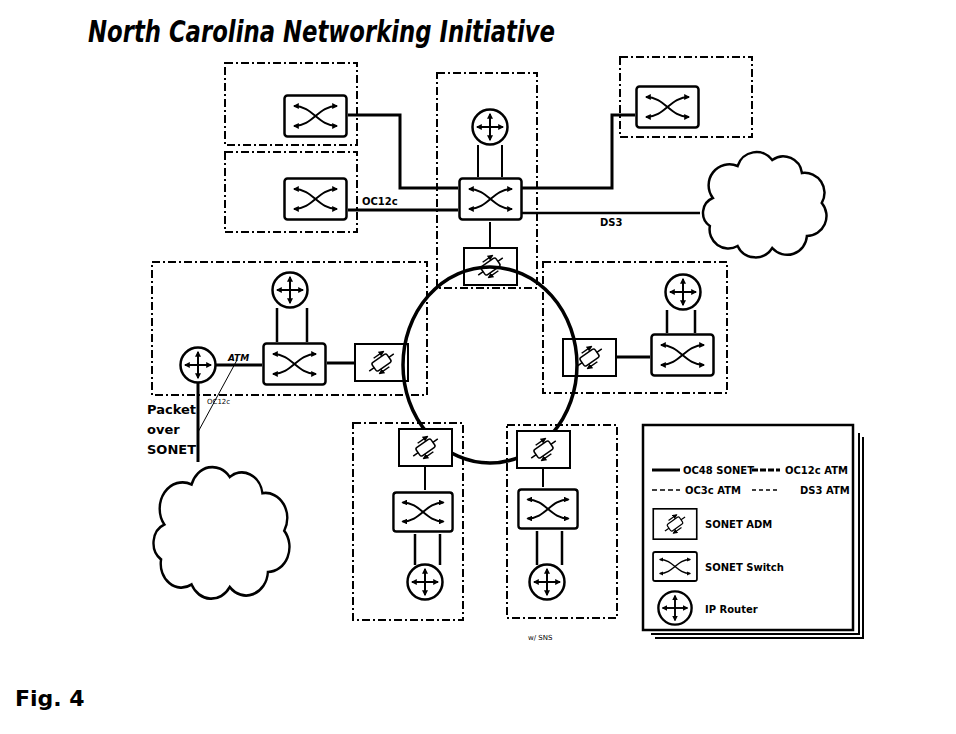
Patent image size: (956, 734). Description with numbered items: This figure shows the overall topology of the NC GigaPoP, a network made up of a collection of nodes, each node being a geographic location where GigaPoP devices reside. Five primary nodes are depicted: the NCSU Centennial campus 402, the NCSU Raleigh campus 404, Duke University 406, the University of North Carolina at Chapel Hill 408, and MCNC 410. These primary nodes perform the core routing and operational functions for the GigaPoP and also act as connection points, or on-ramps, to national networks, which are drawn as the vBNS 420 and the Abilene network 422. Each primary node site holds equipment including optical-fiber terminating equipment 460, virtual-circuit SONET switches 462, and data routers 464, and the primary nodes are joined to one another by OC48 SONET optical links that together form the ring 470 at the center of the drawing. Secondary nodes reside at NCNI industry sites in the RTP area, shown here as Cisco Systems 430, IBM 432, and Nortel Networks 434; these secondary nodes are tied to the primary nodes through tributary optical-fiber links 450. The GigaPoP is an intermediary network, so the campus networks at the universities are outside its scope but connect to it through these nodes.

The NCSU Centennial campus 402 is at (150, 330).
The NCSU Raleigh campus 404 is at (353, 610).
The Duke University 406 is at (515, 618).
The University of North Carolina at Chapel Hill 408 is at (719, 335).
The MCNC 410 is at (537, 93).
The vBNS 420 is at (823, 187).
The Abilene network 422 is at (262, 477).
The Cisco Systems 430 is at (225, 202).
The IBM 432 is at (357, 95).
The Nortel Networks 434 is at (752, 107).
The tributary optical-fiber link 450 is at (612, 180).
The optical-fiber terminating equipment 460 is at (617, 375).
The virtual-circuit SONET switch 462 is at (713, 355).
The data router 464 is at (697, 278).
The SONET ring 470 is at (412, 408).